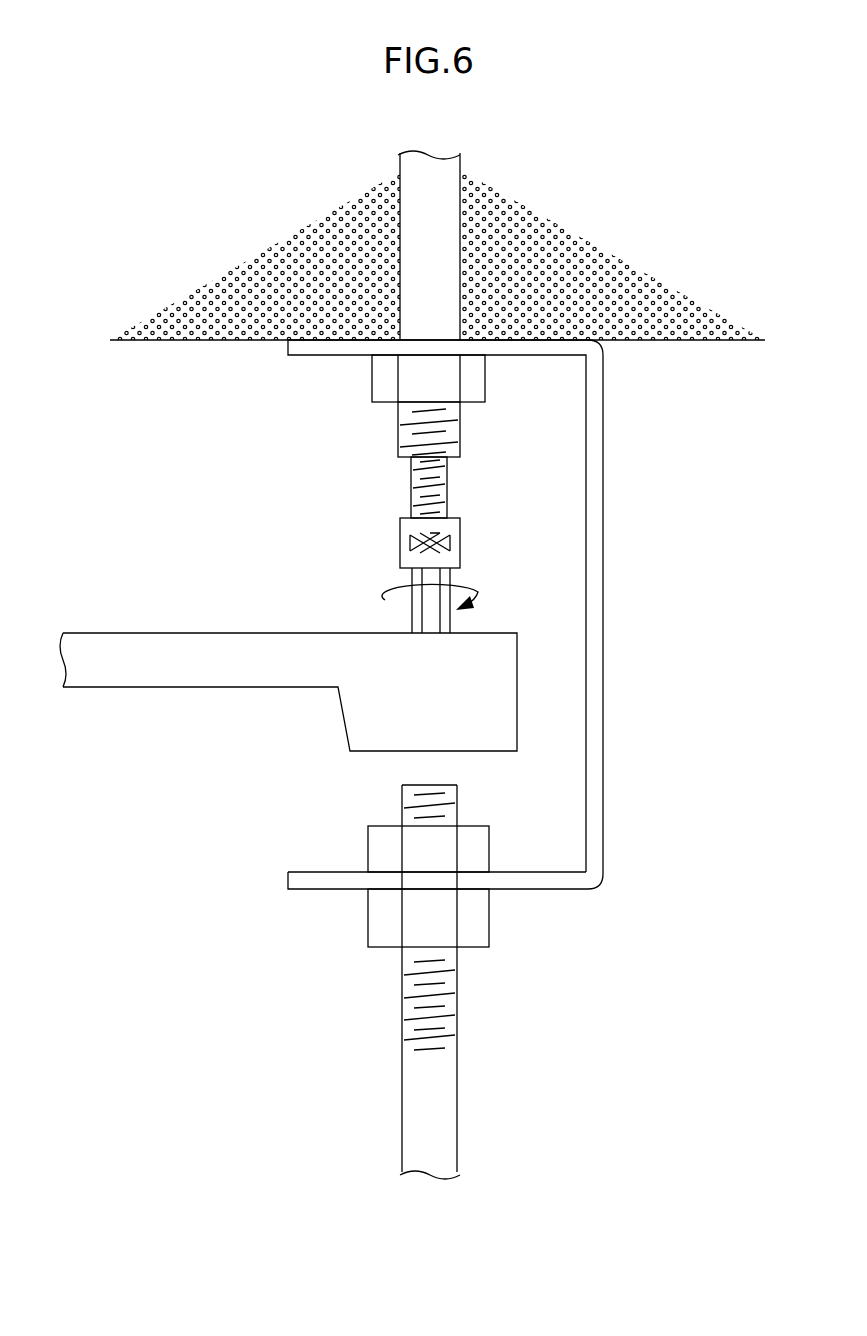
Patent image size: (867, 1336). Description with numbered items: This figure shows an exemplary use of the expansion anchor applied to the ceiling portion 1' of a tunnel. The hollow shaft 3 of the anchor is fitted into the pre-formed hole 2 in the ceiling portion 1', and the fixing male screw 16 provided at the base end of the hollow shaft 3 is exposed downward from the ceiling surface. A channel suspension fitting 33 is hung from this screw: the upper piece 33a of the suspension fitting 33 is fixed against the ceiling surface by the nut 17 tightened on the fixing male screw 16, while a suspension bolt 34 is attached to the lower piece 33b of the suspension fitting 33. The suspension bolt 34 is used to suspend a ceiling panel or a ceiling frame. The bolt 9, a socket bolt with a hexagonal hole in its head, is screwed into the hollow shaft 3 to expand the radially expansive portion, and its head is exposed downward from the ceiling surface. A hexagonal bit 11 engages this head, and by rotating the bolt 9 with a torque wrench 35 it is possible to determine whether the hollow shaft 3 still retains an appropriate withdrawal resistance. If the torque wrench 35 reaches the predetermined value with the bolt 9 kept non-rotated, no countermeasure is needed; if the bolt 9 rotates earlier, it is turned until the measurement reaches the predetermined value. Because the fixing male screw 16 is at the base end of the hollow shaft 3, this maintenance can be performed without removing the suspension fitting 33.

The ceiling portion 1' is at (428, 382).
The pre-formed hole 2 is at (458, 227).
The hollow shaft 3 is at (425, 262).
The bolt 9 is at (407, 535).
The hexagonal bit 11 is at (413, 620).
The fixing male screw 16 is at (452, 430).
The nut 17 is at (487, 382).
The channel suspension fitting 33 is at (466, 650).
The upper piece 33a is at (318, 357).
The lower piece 33b is at (330, 880).
The suspension bolt 34 is at (438, 1068).
The torque wrench 35 is at (343, 727).